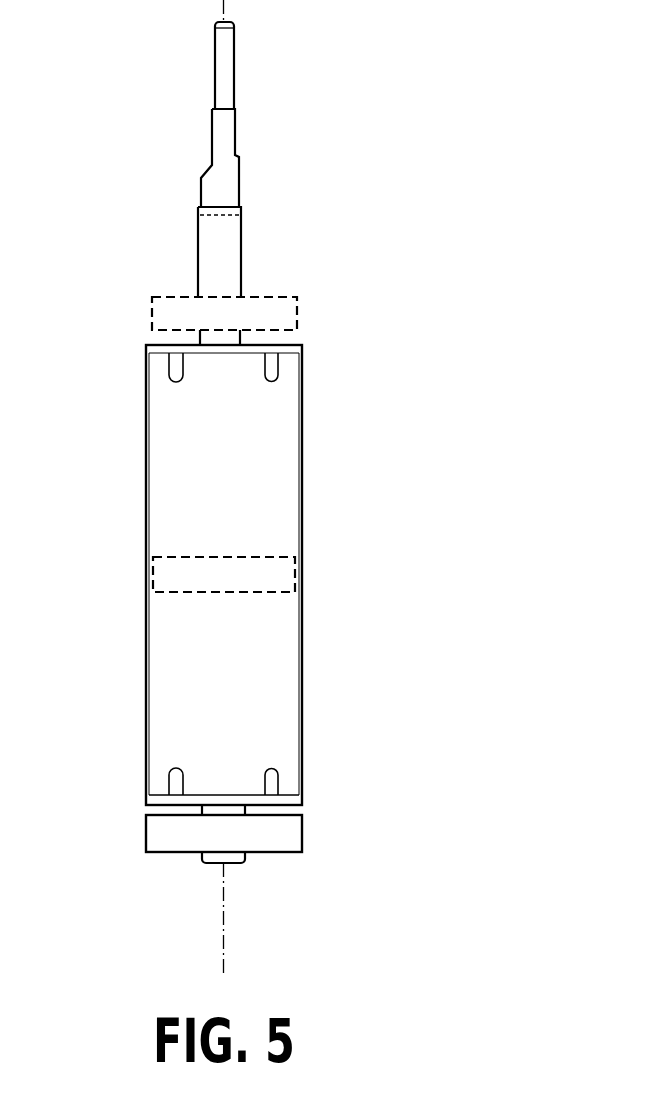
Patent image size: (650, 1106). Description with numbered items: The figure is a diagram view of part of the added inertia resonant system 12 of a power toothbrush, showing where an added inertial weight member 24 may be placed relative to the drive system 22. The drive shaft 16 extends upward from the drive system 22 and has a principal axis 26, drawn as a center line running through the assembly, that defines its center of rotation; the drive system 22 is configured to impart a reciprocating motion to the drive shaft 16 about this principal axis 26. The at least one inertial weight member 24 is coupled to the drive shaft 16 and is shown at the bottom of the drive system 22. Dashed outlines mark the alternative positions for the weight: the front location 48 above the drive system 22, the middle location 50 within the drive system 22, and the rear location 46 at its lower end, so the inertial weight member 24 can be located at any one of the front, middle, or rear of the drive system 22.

The added inertia resonant system 12 is at (408, 280).
The drive shaft 16 is at (229, 182).
The drive system 22 is at (283, 487).
The inertial weight member 24 is at (288, 835).
The principal axis 26 is at (223, 917).
The rear location of the drive system 46 is at (137, 805).
The front location of the drive system 48 is at (148, 308).
The middle location of the drive system 50 is at (178, 575).